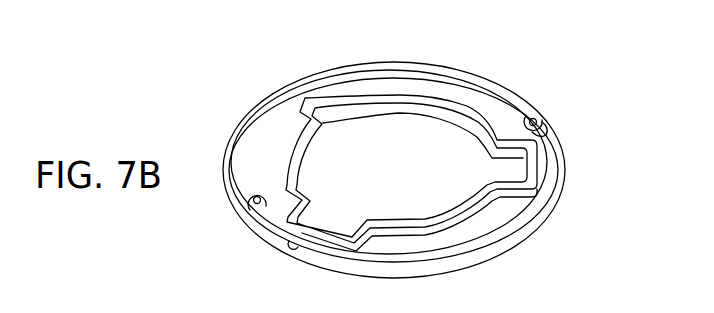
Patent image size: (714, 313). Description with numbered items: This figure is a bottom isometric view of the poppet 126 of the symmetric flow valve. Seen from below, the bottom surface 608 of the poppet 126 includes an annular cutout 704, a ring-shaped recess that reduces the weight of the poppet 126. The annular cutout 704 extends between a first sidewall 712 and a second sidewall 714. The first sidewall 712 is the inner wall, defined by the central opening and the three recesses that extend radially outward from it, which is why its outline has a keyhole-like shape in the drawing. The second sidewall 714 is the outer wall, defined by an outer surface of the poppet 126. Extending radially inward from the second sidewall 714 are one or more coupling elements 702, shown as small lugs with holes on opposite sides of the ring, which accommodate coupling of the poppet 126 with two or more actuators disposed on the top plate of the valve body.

The poppet 126 is at (290, 63).
The bottom surface 608 is at (445, 70).
The coupling elements 702 is at (550, 124).
The annular cutout 704 is at (478, 228).
The first sidewall 712 is at (298, 182).
The second sidewall 714 is at (291, 245).